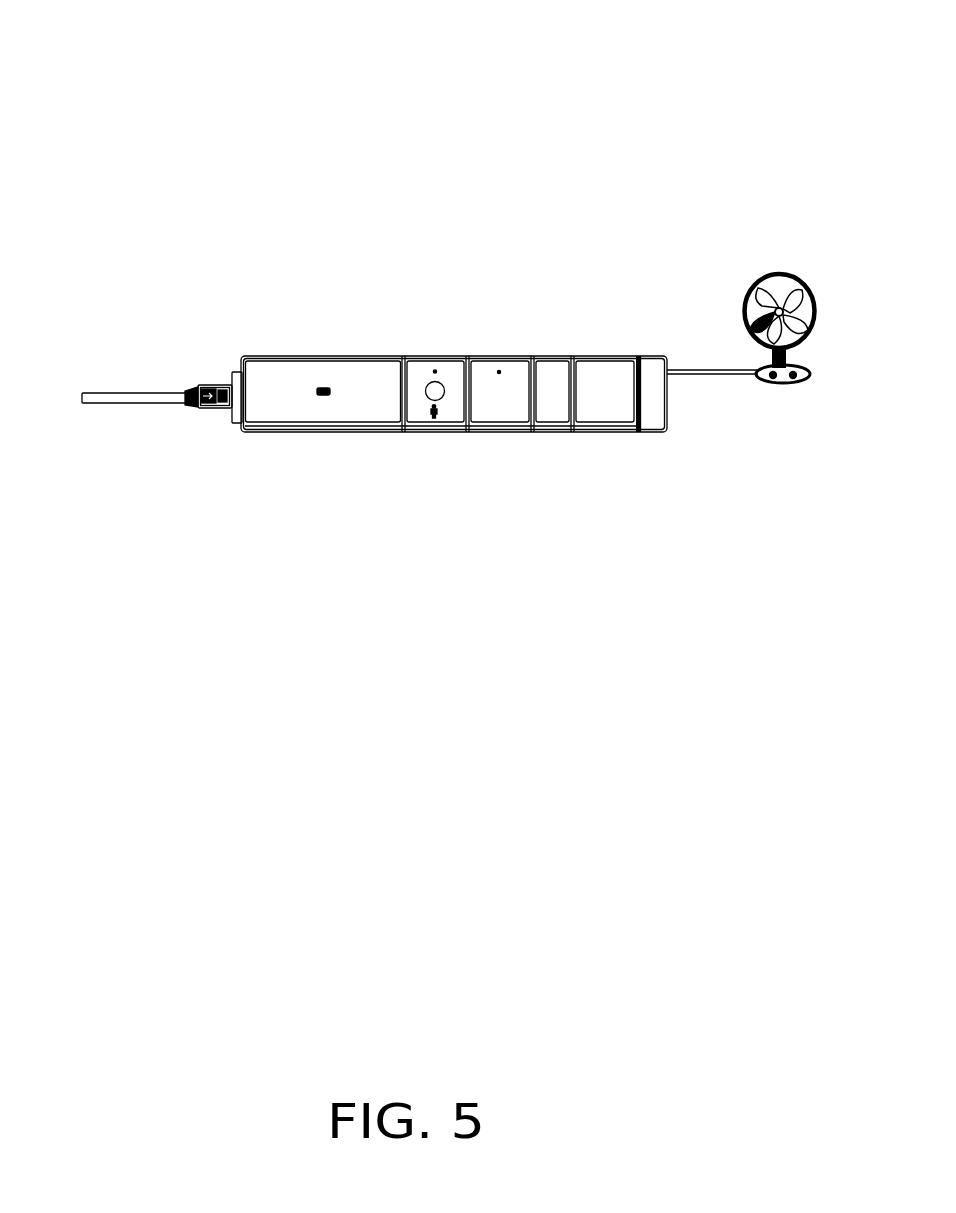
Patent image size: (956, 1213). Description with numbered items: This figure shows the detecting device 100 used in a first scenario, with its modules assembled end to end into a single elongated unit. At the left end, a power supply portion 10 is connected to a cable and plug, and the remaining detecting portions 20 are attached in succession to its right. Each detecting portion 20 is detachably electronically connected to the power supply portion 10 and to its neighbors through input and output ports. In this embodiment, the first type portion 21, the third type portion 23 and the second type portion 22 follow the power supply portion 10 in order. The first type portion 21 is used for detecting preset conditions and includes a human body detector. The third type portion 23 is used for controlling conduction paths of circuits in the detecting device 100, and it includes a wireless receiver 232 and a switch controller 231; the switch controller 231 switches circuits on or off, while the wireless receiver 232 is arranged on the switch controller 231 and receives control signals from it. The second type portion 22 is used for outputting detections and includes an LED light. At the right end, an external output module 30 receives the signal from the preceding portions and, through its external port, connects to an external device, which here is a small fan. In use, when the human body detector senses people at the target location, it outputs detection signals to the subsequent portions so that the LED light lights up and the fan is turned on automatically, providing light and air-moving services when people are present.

The detecting device 100 is at (468, 38).
The power supply portion 10 is at (331, 368).
The detecting portion 20 is at (638, 522).
The first type portion 21 is at (452, 411).
The second type portion 22 is at (614, 411).
The third type portion 23 is at (583, 491).
The switch controller 231 is at (556, 411).
The wireless receiver 232 is at (508, 411).
The external output module 30 is at (653, 363).